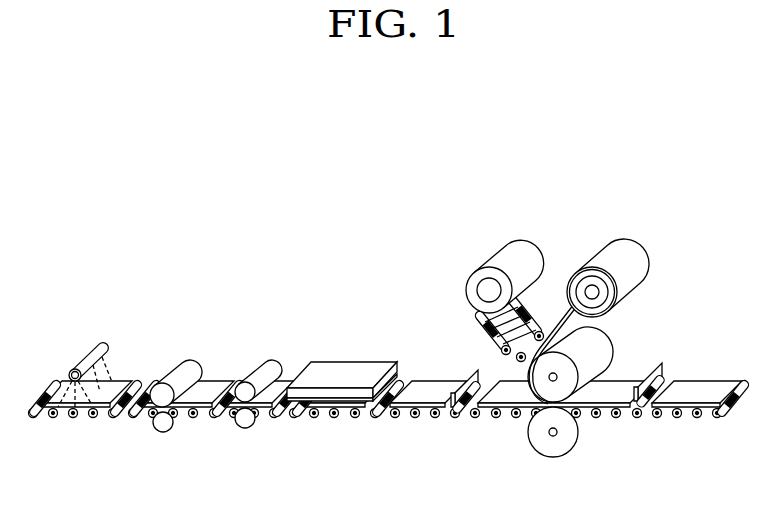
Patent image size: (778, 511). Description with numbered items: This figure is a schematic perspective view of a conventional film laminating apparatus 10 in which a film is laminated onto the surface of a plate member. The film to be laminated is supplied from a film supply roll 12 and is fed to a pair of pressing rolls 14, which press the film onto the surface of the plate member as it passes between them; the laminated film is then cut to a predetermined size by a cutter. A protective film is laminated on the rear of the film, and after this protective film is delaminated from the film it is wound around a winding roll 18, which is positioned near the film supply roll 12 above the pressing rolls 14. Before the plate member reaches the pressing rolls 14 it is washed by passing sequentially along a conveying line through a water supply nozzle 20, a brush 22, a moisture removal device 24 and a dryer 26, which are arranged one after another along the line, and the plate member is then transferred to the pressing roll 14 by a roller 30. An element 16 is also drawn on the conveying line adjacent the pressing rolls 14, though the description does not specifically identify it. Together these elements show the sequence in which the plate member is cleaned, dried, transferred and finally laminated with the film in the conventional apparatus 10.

The film laminating apparatus 10 is at (711, 189).
The film supply roll 12 is at (621, 250).
The pressing rolls 14 is at (593, 345).
The guide plate 16 is at (663, 363).
The winding roll 18 is at (519, 250).
The water supply nozzle 20 is at (97, 352).
The brush 22 is at (185, 365).
The moisture removal device 24 is at (268, 366).
The dryer 26 is at (352, 365).
The roller 30 is at (33, 418).